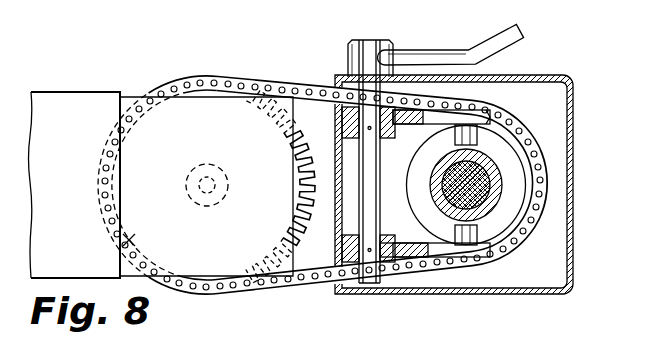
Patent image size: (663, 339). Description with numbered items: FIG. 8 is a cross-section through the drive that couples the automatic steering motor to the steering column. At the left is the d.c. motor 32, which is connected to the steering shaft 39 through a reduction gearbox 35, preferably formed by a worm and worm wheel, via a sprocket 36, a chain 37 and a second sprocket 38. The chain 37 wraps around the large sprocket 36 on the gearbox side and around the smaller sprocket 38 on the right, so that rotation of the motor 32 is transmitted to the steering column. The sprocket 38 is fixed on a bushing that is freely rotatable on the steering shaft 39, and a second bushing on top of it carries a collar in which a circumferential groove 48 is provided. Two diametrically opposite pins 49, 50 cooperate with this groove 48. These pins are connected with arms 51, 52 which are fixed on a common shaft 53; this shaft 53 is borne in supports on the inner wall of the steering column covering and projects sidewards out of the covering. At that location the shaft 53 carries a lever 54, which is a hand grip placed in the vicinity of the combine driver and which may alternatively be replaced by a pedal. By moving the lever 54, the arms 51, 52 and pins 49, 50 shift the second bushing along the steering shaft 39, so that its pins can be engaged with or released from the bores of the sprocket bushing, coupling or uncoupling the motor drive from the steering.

The d.c. motor 32 is at (73, 97).
The reduction gearbox 35 is at (129, 240).
The sprocket 36 is at (300, 143).
The chain 37 is at (298, 87).
The sprocket 38 is at (543, 205).
The steering shaft 39 is at (488, 184).
The circumferential groove 48 is at (506, 160).
The pin 49 is at (486, 238).
The pin 50 is at (522, 130).
The arm 51 is at (473, 121).
The arm 52 is at (478, 258).
The common shaft 53 is at (367, 219).
The lever 54 is at (462, 52).